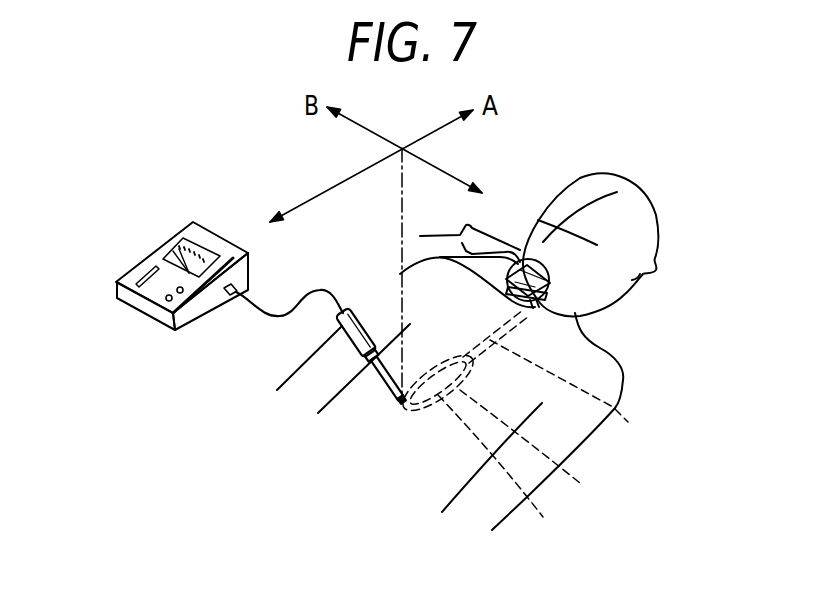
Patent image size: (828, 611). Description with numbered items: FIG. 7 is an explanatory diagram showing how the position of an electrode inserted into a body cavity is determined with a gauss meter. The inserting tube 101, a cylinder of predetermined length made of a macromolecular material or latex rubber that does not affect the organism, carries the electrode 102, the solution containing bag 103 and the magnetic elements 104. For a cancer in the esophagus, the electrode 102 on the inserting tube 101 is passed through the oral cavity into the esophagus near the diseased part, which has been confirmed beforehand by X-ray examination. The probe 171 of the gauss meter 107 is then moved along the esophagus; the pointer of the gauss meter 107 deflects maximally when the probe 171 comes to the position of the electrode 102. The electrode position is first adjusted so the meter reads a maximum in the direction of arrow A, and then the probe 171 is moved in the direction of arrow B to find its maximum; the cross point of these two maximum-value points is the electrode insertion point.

The inserting tube 101 is at (527, 280).
The electrode 102 is at (504, 474).
The solution containing bag 103 is at (537, 450).
The magnetic elements 104 is at (408, 415).
The gauss meter 107 is at (167, 233).
The probe 171 is at (378, 389).